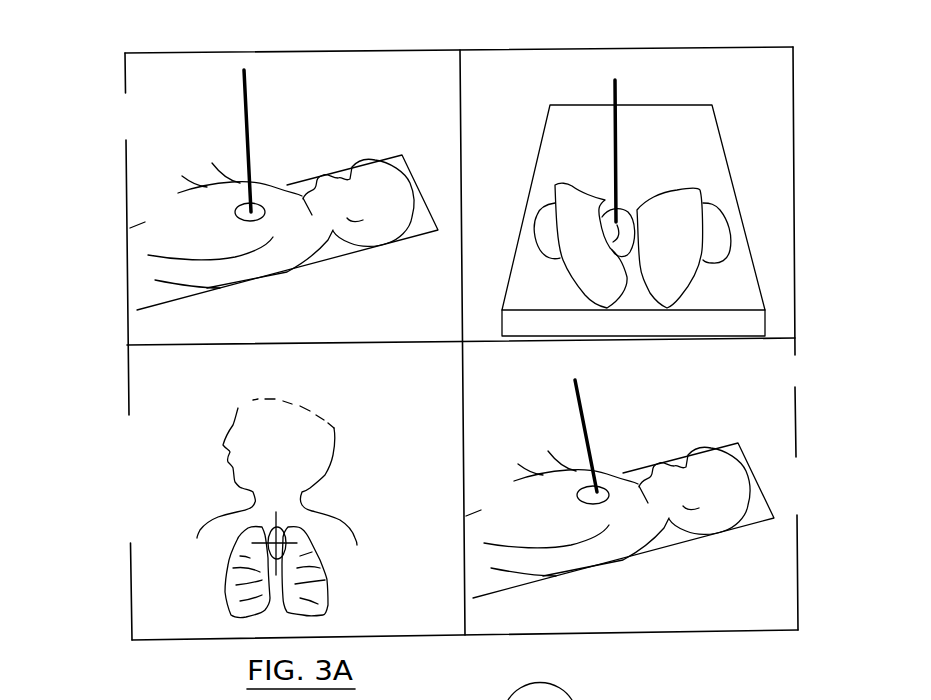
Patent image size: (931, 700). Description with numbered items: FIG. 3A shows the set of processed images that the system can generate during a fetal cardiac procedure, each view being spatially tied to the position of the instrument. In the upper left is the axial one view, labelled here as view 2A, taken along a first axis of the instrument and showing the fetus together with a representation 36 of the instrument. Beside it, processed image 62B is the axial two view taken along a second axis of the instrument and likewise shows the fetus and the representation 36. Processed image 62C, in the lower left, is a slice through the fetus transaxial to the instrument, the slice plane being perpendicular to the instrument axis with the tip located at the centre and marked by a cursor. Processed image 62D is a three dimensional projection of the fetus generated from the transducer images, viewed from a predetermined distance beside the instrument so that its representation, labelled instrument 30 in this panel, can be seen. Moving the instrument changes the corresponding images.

The axial view 1 display quadrant 2A is at (162, 133).
The representation of the instrument 36 is at (237, 96).
The processed image (axial 2 view) 62B is at (749, 162).
The processed image (transaxial slice at tip) 62C is at (164, 535).
The processed image (three dimensional projection) 62D is at (822, 472).
The instrument 30 is at (600, 393).